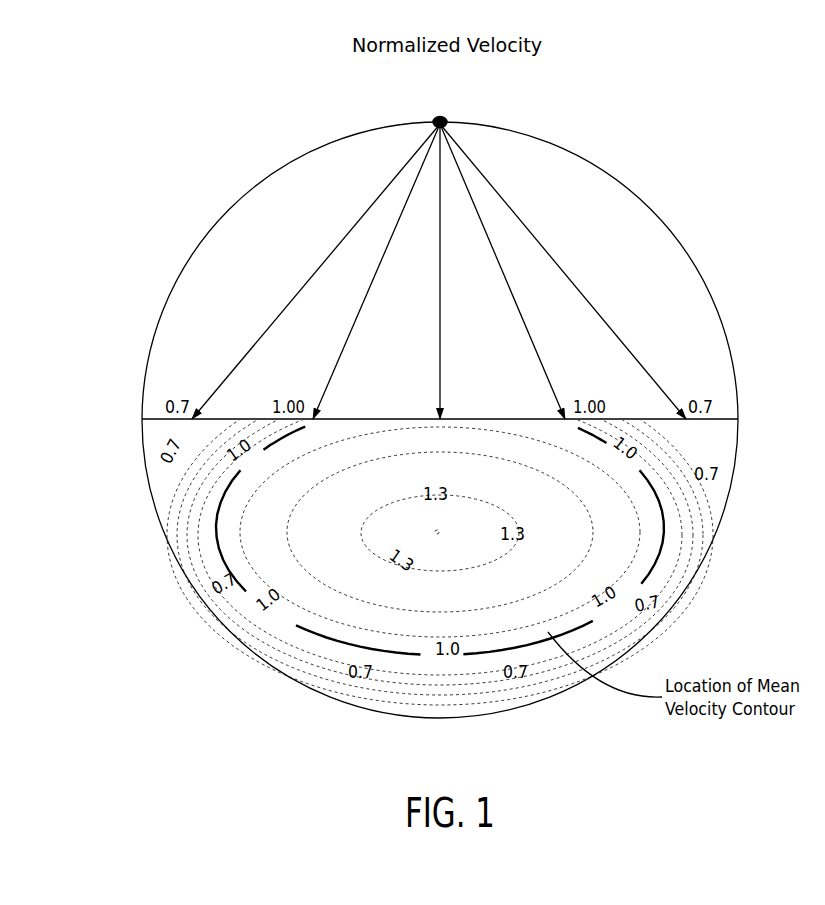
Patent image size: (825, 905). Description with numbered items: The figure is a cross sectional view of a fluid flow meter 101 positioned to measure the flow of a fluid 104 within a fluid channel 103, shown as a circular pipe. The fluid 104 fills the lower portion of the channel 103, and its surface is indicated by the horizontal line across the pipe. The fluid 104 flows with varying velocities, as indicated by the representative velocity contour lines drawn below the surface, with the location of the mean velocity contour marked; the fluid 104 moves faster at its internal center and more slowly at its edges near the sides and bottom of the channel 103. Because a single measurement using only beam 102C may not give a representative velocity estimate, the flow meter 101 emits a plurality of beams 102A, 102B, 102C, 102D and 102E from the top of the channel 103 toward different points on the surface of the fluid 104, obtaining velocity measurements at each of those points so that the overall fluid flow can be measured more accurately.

The fluid flow meter 101 is at (433, 116).
The beam 102A is at (323, 262).
The beam 102B is at (346, 342).
The beam 102C is at (440, 330).
The beam 102D is at (528, 332).
The beam 102E is at (550, 255).
The fluid channel 103 is at (250, 190).
The fluid 104 is at (153, 418).